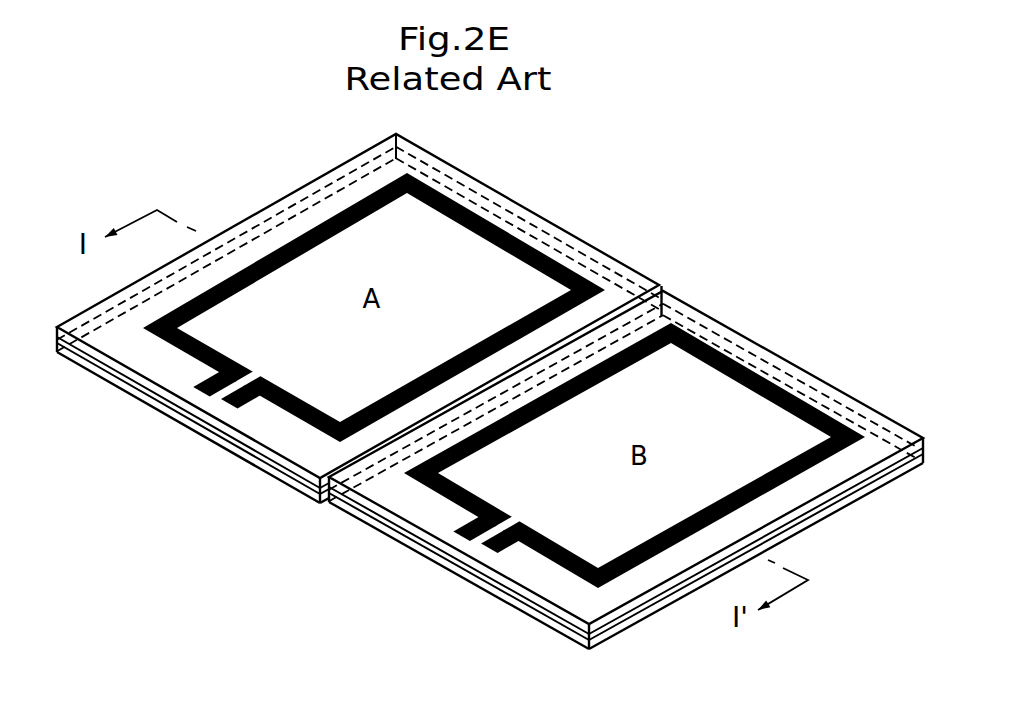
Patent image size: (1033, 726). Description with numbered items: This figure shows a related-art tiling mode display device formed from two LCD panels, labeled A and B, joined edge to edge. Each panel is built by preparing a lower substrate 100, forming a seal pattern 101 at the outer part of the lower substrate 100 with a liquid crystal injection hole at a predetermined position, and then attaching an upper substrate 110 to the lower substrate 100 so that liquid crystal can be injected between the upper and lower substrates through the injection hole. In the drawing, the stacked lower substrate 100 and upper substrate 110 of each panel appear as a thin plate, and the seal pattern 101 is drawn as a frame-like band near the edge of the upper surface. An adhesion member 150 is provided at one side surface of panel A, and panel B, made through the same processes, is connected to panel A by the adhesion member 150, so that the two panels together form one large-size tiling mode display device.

The lower substrate 100 is at (270, 463).
The upper substrate 110 is at (145, 383).
The seal pattern 101 is at (476, 212).
The adhesion member 150 is at (661, 284).